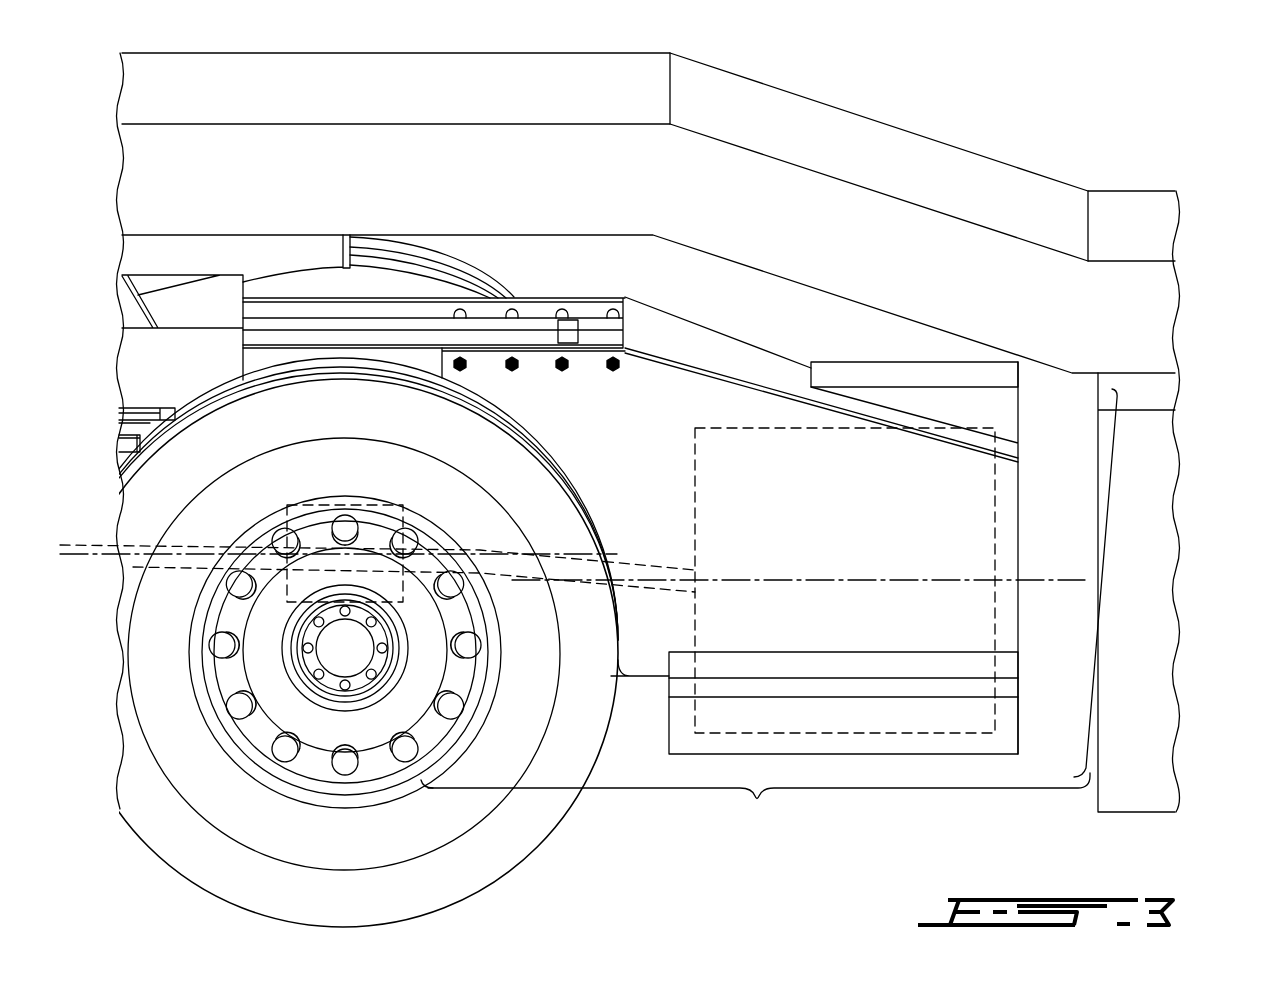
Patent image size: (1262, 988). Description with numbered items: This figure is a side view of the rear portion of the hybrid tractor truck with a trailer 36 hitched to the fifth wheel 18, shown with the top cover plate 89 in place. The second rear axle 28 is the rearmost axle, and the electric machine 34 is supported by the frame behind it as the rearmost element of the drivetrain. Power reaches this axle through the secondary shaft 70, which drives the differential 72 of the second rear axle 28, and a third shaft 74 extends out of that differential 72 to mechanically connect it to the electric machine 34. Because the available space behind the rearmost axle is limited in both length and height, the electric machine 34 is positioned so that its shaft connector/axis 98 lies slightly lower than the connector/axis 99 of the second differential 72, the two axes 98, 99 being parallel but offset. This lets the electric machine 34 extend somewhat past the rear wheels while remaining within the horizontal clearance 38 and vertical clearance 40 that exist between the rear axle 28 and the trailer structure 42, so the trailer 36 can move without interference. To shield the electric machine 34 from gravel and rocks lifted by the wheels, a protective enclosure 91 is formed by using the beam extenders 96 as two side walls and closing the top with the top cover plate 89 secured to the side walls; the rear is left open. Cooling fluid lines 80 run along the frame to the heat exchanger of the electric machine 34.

The fifth wheel 18 is at (205, 253).
The trailer 36 is at (975, 170).
The protective enclosure 91 is at (820, 328).
The beam extenders 96 is at (658, 395).
The top cover plate 89 is at (728, 355).
The fluid lines 80 is at (472, 342).
The differential of the second rear axle 72 is at (350, 512).
The secondary shaft 70 is at (140, 549).
The connector/axis of the second differential 99 is at (88, 566).
The third shaft 74 is at (646, 565).
The second rear axle 28 is at (333, 655).
The electric machine 34 is at (950, 610).
The horizontal clearance 38 is at (755, 808).
The vertical clearance 40 is at (1106, 578).
The trailer structure 42 is at (1145, 455).
The shaft connector/axis of the electric machine 98 is at (1055, 577).